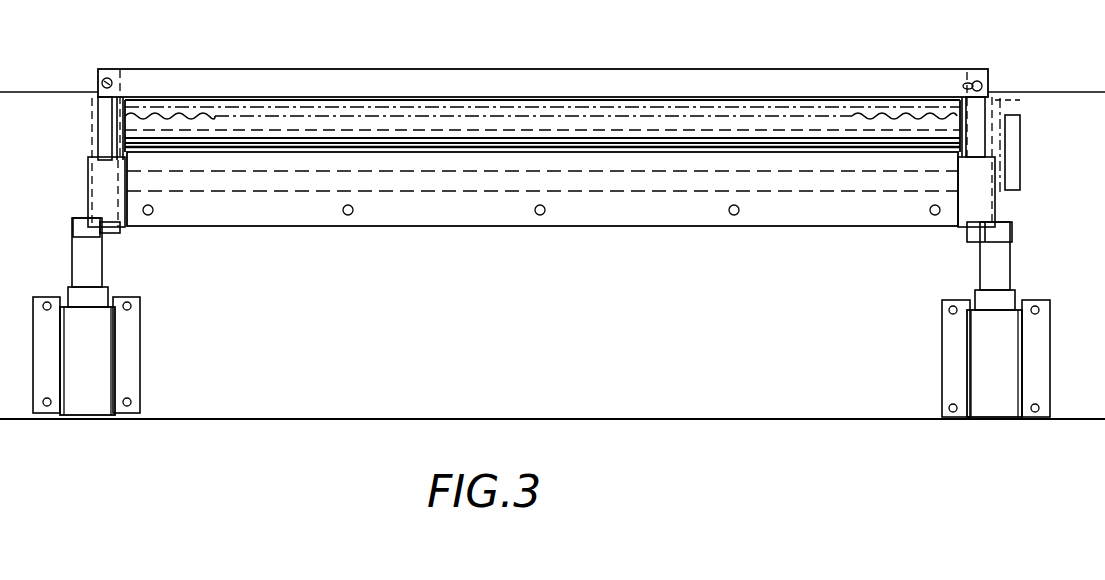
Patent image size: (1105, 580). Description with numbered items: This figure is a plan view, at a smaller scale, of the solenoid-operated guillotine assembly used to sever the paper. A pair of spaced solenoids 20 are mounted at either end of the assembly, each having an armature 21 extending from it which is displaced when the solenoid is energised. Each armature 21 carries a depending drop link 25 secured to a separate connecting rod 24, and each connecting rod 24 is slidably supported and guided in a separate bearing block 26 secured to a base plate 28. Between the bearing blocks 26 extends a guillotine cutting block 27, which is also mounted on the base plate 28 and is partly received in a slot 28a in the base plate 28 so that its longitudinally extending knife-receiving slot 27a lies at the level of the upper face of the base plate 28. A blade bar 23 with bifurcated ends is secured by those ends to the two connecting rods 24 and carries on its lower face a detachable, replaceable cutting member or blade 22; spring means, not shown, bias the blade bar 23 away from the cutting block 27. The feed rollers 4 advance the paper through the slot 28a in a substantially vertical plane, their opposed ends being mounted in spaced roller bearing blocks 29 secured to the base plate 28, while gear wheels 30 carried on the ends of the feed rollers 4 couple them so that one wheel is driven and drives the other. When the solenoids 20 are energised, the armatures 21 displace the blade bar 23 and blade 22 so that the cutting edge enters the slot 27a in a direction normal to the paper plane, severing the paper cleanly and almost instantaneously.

The feed rollers 4 is at (400, 146).
The solenoids 20 is at (104, 357).
The armature 21 is at (88, 260).
The cutting member or blade 22 is at (873, 113).
The blade bar 23 is at (531, 82).
The connecting rod 24 is at (105, 132).
The drop link 25 is at (78, 228).
The bearing block 26 is at (995, 202).
The guillotine cutting block 27 is at (460, 207).
The knife-receiving slot 27a is at (583, 165).
The base plate 28 is at (653, 382).
The slot in the base plate 28a is at (300, 188).
The roller bearing blocks 29 is at (1005, 110).
The gear wheels 30 is at (1015, 153).